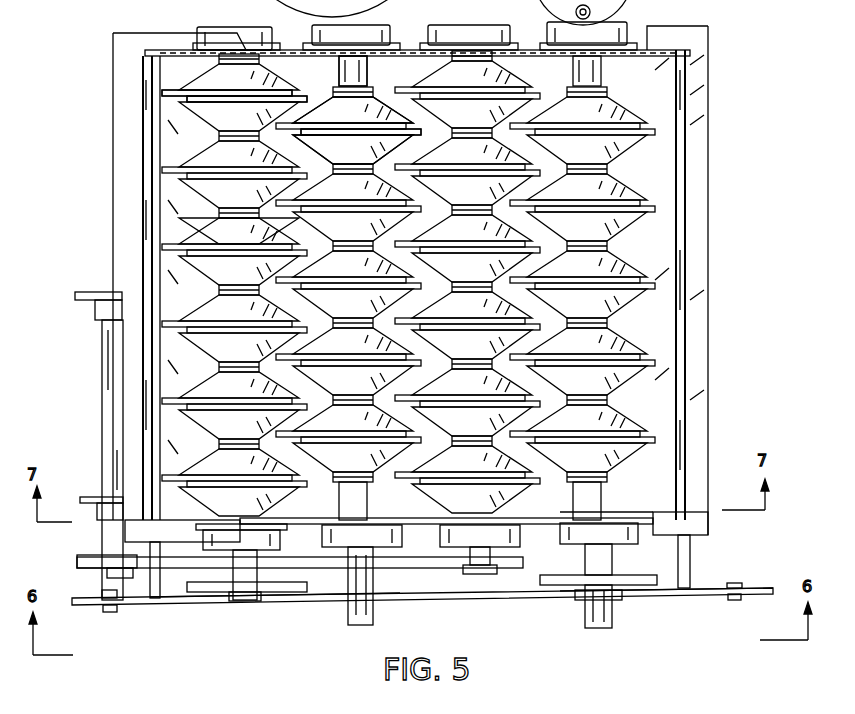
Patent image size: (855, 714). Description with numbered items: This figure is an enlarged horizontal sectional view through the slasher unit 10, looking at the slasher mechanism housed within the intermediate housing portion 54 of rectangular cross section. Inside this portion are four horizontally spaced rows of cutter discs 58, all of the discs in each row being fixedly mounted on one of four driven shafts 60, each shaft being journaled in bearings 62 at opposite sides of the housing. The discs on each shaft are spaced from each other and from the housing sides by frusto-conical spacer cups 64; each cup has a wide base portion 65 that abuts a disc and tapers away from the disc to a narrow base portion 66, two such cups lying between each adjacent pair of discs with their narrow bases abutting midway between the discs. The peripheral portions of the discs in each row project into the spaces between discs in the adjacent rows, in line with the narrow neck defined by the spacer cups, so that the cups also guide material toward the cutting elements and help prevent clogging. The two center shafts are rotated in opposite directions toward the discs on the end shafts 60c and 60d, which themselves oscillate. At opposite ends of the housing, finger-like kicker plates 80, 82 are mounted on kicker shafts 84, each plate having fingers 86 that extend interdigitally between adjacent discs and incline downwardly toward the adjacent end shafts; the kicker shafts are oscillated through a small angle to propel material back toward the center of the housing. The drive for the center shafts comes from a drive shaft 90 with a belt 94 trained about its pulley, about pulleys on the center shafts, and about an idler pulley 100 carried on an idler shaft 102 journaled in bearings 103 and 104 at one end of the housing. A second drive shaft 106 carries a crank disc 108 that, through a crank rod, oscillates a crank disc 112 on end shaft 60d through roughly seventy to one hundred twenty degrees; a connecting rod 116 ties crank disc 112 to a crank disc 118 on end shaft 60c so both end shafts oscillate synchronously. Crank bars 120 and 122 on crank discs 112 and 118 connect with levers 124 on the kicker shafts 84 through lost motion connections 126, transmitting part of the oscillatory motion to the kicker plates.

The slasher unit 10 is at (429, 280).
The intermediate housing portion 54 is at (683, 232).
The cutter discs 58 is at (301, 90).
The driven shafts 60 is at (368, 72).
The end cutter disc shaft 60c is at (258, 602).
The end cutter disc shaft 60d is at (582, 563).
The bearings 62 is at (243, 40).
The frusto-conical spacer cups 64 is at (328, 118).
The wide base portion 65 is at (403, 134).
The narrow base portion 66 is at (383, 167).
The kicker plate 80 is at (163, 268).
The kicker plate 82 is at (660, 158).
The kicker shafts 84 is at (147, 213).
The fingers 86 is at (207, 213).
The drive shaft 90 is at (373, 618).
The belt 94 is at (425, 562).
The idler pulley 100 is at (97, 562).
The idler shaft 102 is at (107, 541).
The bearing 103 is at (97, 510).
The bearing 104 is at (95, 312).
The drive shaft 106 is at (585, 625).
The crank disc 108 is at (632, 600).
The crank disc 112 is at (632, 578).
The connecting rod 116 is at (462, 594).
The crank disc 118 is at (270, 592).
The crank bar 120 is at (667, 593).
The crank bar 122 is at (187, 602).
The levers 124 is at (135, 600).
The lost motion connections 126 is at (738, 598).